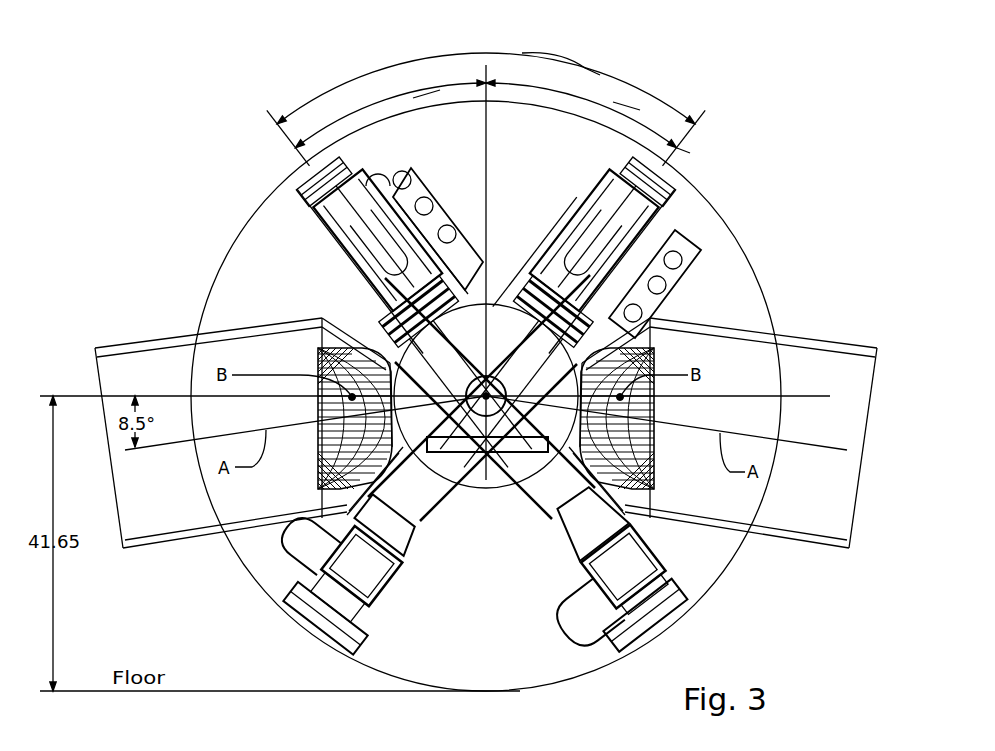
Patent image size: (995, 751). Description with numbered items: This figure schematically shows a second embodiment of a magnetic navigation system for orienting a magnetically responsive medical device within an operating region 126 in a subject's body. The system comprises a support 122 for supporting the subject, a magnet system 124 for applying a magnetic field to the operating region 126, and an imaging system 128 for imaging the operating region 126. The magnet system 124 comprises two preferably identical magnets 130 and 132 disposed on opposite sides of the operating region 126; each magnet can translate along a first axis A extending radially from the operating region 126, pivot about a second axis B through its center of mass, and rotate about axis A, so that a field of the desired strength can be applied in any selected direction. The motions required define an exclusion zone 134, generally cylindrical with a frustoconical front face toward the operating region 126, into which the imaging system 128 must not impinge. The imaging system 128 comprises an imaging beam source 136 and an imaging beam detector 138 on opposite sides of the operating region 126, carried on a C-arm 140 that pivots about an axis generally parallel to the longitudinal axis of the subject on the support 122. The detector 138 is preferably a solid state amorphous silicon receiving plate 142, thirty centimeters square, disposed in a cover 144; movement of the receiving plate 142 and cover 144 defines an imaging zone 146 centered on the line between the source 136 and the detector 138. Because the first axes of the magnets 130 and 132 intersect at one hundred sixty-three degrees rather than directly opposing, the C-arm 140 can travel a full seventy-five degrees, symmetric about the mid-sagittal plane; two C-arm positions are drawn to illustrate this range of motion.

The support 122 is at (508, 478).
The magnet system 124 is at (177, 552).
The operating region 126 is at (462, 455).
The imaging system 128 is at (282, 152).
The magnet 130 is at (347, 478).
The magnet 132 is at (630, 350).
The exclusion zone 134 is at (175, 342).
The imaging beam source 136 is at (630, 575).
The imaging beam detector 138 is at (480, 250).
The C-arm 140 is at (675, 200).
The receiving plate 142 is at (392, 285).
The cover 144 is at (400, 322).
The imaging zone 146 is at (418, 172).